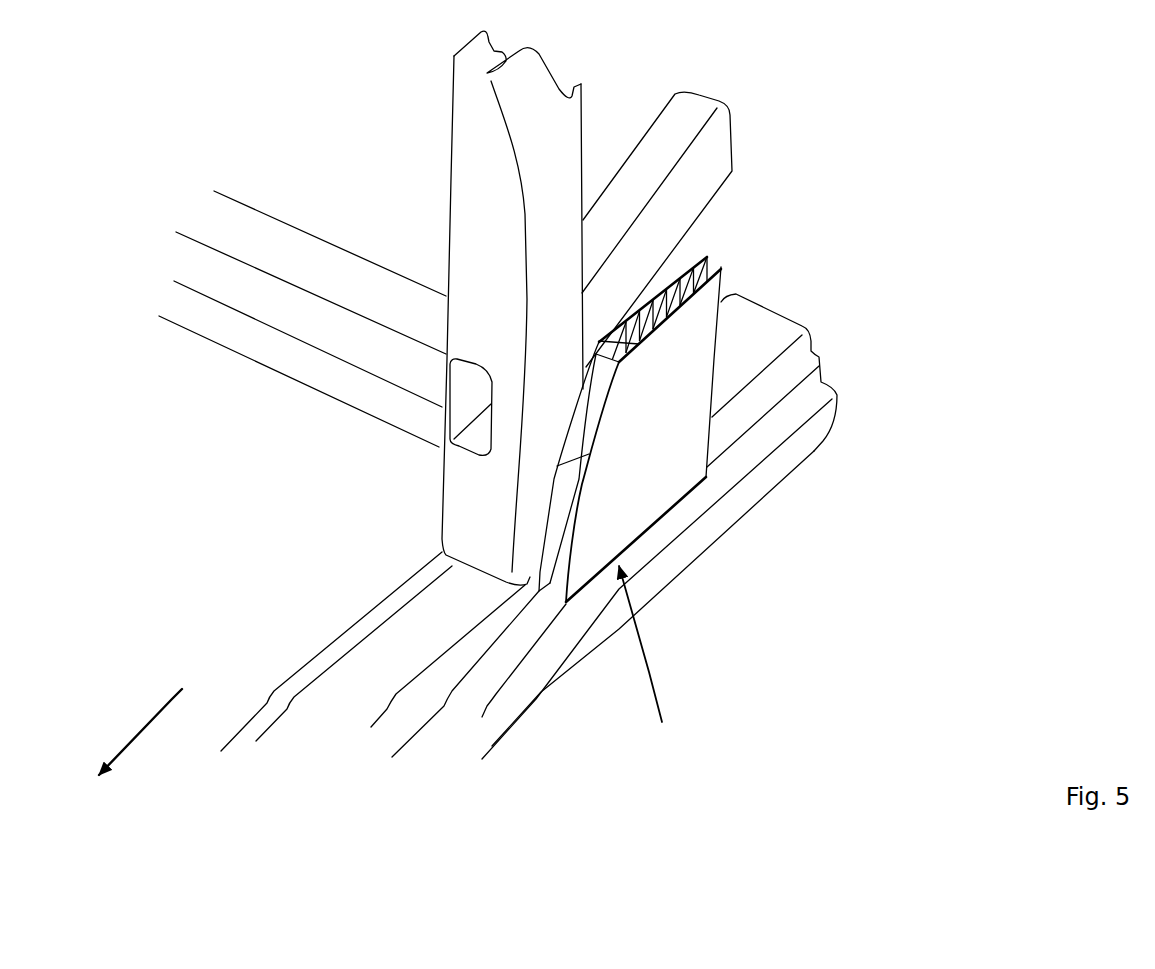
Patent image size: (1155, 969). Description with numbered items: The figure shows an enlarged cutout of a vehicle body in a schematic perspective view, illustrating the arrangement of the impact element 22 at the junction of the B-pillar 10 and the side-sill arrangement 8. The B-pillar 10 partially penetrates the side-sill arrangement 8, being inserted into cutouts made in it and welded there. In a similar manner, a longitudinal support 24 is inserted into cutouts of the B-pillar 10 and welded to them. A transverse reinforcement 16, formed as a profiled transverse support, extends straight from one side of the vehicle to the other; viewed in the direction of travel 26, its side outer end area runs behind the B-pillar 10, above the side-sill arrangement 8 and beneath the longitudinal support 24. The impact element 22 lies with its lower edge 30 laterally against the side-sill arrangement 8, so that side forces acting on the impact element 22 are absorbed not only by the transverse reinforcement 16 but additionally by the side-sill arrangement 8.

The side-sill arrangement 8 is at (522, 655).
The B-pillar 10 is at (463, 108).
The transverse reinforcement 16 is at (258, 355).
The impact element 22 is at (672, 482).
The longitudinal support 24 is at (718, 152).
The direction of travel 26 is at (145, 730).
The lower edge 30 is at (651, 659).